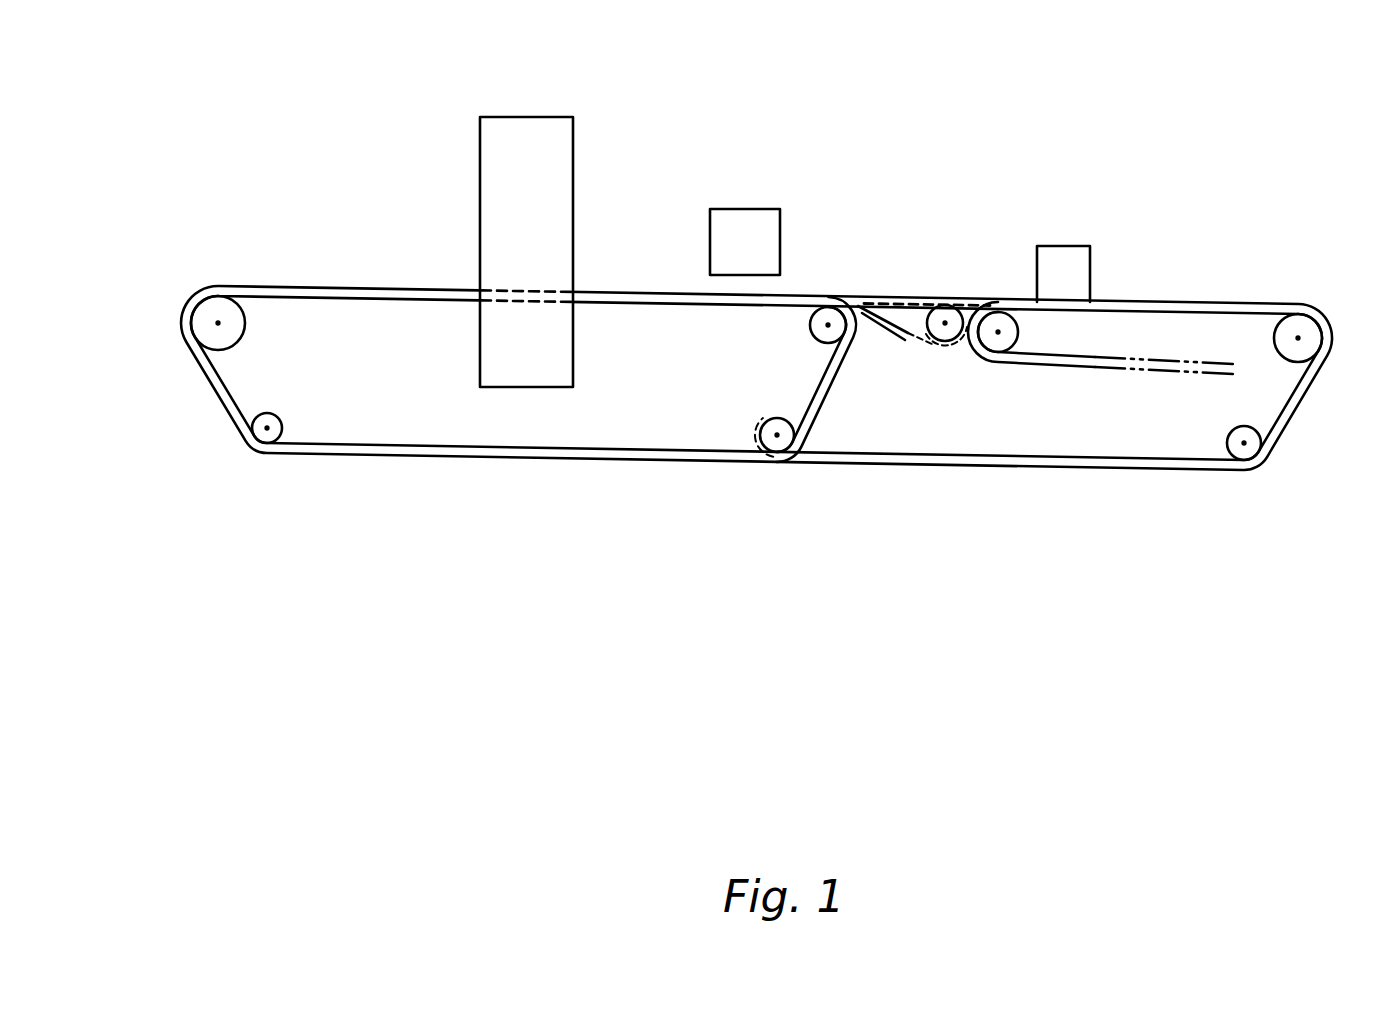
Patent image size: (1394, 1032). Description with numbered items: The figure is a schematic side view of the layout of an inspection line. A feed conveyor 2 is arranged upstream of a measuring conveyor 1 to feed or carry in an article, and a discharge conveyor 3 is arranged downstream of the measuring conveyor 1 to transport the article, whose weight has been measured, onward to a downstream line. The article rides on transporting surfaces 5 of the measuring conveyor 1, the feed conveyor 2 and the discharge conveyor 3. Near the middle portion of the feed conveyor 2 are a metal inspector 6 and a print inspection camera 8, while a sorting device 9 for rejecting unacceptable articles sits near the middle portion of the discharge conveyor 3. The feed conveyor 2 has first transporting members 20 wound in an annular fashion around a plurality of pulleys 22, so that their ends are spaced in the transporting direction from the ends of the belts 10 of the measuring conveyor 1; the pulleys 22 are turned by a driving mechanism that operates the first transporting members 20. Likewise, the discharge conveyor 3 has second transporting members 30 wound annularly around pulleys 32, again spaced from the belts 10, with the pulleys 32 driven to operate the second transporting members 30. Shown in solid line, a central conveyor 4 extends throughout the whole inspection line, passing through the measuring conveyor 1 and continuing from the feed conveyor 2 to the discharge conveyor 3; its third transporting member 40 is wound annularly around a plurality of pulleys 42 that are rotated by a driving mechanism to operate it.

The measuring conveyor 1 is at (941, 238).
The feed conveyor 2 is at (549, 309).
The discharge conveyor 3 is at (1134, 296).
The central conveyor 4 is at (733, 413).
The transporting surfaces 5 is at (415, 290).
The metal inspector 6 is at (522, 117).
The print inspection camera 8 is at (735, 209).
The sorting device 9 is at (1080, 246).
The belts 10 is at (930, 348).
The first transporting members 20 is at (653, 307).
The pulleys 22 is at (262, 408).
The second transporting members 30 is at (1058, 368).
The pulleys 32 is at (1016, 364).
The third transporting member 40 is at (962, 468).
The pulleys 42 is at (204, 327).